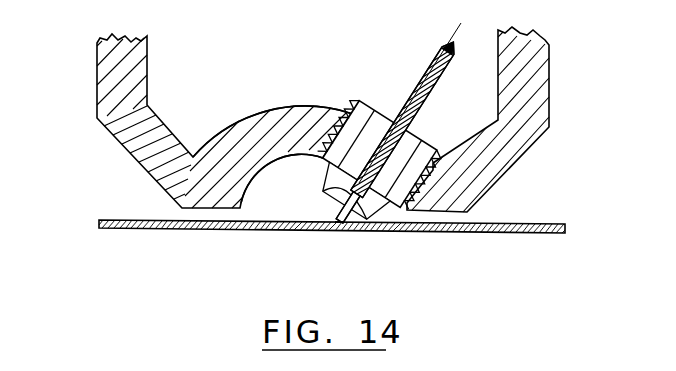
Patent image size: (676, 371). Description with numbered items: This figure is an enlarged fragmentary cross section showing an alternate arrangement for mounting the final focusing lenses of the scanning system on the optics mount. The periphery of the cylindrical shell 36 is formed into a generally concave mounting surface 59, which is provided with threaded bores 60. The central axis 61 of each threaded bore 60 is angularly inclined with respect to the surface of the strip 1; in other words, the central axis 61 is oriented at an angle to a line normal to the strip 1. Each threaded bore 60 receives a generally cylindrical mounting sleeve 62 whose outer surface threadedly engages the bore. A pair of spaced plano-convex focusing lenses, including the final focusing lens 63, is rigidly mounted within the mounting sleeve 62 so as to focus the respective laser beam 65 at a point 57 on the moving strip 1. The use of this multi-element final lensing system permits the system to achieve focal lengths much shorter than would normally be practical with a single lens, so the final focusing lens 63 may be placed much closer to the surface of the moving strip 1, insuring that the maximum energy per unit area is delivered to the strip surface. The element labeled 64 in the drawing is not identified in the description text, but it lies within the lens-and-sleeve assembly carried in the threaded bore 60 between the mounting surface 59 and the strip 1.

The strip 1 is at (475, 233).
The cylindrical shell 36 is at (105, 73).
The point 57 is at (340, 225).
The mounting surface 59 is at (243, 128).
The threaded bore 60 is at (425, 176).
The central axis 61 is at (437, 43).
The mounting sleeve 62 is at (350, 104).
The final focusing lens 63 is at (340, 219).
The spherical washer 64 is at (378, 137).
The laser beam 65 is at (434, 94).